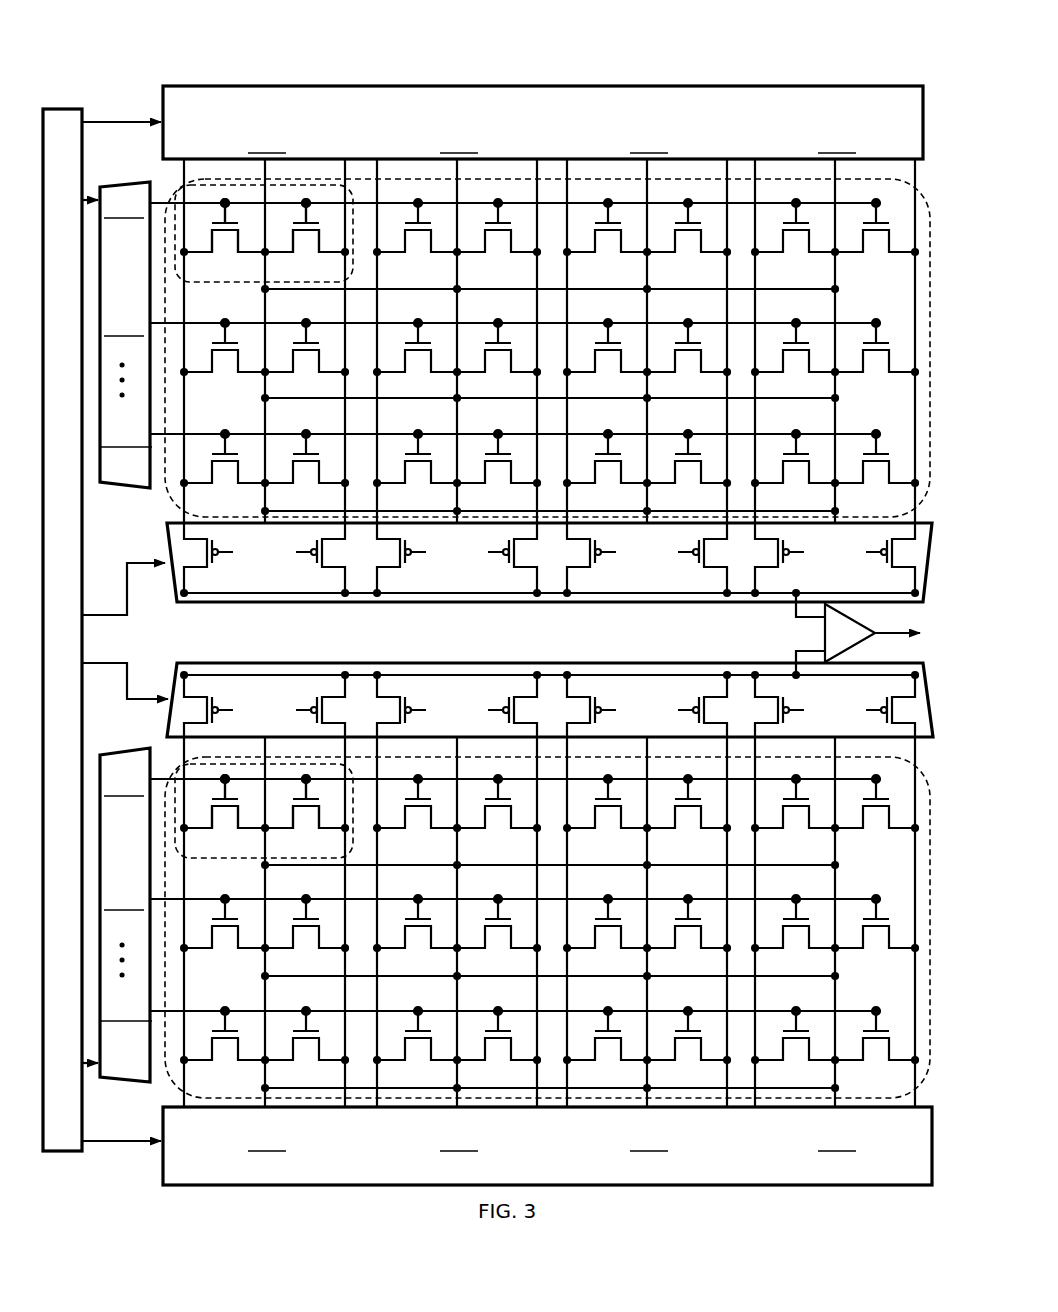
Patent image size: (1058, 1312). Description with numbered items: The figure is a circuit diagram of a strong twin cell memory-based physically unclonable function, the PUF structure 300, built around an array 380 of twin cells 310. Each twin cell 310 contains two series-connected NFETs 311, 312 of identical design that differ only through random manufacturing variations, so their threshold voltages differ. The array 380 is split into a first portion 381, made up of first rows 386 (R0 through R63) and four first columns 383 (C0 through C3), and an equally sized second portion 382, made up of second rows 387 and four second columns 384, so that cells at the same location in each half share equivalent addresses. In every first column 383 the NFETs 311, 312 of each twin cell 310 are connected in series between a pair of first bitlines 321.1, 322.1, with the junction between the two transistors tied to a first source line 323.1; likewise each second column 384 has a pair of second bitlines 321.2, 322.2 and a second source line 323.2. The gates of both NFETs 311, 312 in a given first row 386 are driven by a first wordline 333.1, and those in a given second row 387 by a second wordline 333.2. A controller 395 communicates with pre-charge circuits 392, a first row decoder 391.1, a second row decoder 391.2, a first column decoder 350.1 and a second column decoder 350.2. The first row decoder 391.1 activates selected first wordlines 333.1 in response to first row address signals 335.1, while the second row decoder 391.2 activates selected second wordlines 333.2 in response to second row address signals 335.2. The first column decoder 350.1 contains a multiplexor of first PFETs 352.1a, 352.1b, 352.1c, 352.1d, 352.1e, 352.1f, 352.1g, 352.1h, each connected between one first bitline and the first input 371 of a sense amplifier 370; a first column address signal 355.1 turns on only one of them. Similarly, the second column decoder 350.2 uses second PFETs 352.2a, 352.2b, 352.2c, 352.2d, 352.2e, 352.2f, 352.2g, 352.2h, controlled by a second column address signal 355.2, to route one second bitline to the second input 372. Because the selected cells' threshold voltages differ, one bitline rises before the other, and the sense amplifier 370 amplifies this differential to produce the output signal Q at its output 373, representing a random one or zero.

The PUF structure 300 is at (829, 48).
The controller 395 is at (75, 108).
The first column address signal 355.1 is at (122, 120).
The second column address signal 355.2 is at (154, 696).
The first row address signal 335.1 is at (98, 196).
The second row address signal 335.2 is at (93, 1065).
The first columns 383 is at (271, 120).
The second columns 384 is at (282, 1158).
The pre-charge circuit 392 is at (547, 636).
The array 380 is at (565, 625).
The first portion 381 is at (565, 348).
The second portion 382 is at (565, 927).
The first rows 386 is at (129, 226).
The second rows 387 is at (129, 811).
The first row decoder 391.1 is at (100, 335).
The second row decoder 391.2 is at (100, 915).
The twin cell 310 is at (243, 284).
The NFET 311 is at (230, 258).
The NFET 312 is at (311, 256).
The first bitline 321.1 is at (184, 180).
The second bitline 321.2 is at (193, 1086).
The first bitline 322.1 is at (343, 180).
The second bitline 322.2 is at (343, 1081).
The first source line 323.1 is at (263, 180).
The second source line 323.2 is at (263, 1082).
The first wordline 333.1 is at (474, 202).
The second wordline 333.2 is at (474, 777).
The first column decoder 350.1 is at (166, 547).
The second column decoder 350.2 is at (168, 725).
The first PFET 352.1a is at (212, 570).
The first PFET 352.1b is at (308, 546).
The first PFET 352.1c is at (403, 568).
The first PFET 352.1d is at (498, 546).
The first PFET 352.1e is at (575, 568).
The first PFET 352.1f is at (690, 544).
The first PFET 352.1g is at (782, 570).
The first PFET 352.1h is at (872, 545).
The second PFET 352.2a is at (224, 697).
The second PFET 352.2b is at (308, 715).
The second PFET 352.2c is at (397, 697).
The second PFET 352.2d is at (490, 719).
The second PFET 352.2e is at (587, 697).
The second PFET 352.2f is at (686, 719).
The second PFET 352.2g is at (794, 697).
The second PFET 352.2h is at (871, 716).
The sense amplifier 370 is at (862, 641).
The first input 371 is at (794, 616).
The second input 372 is at (794, 652).
The output 373 is at (877, 637).